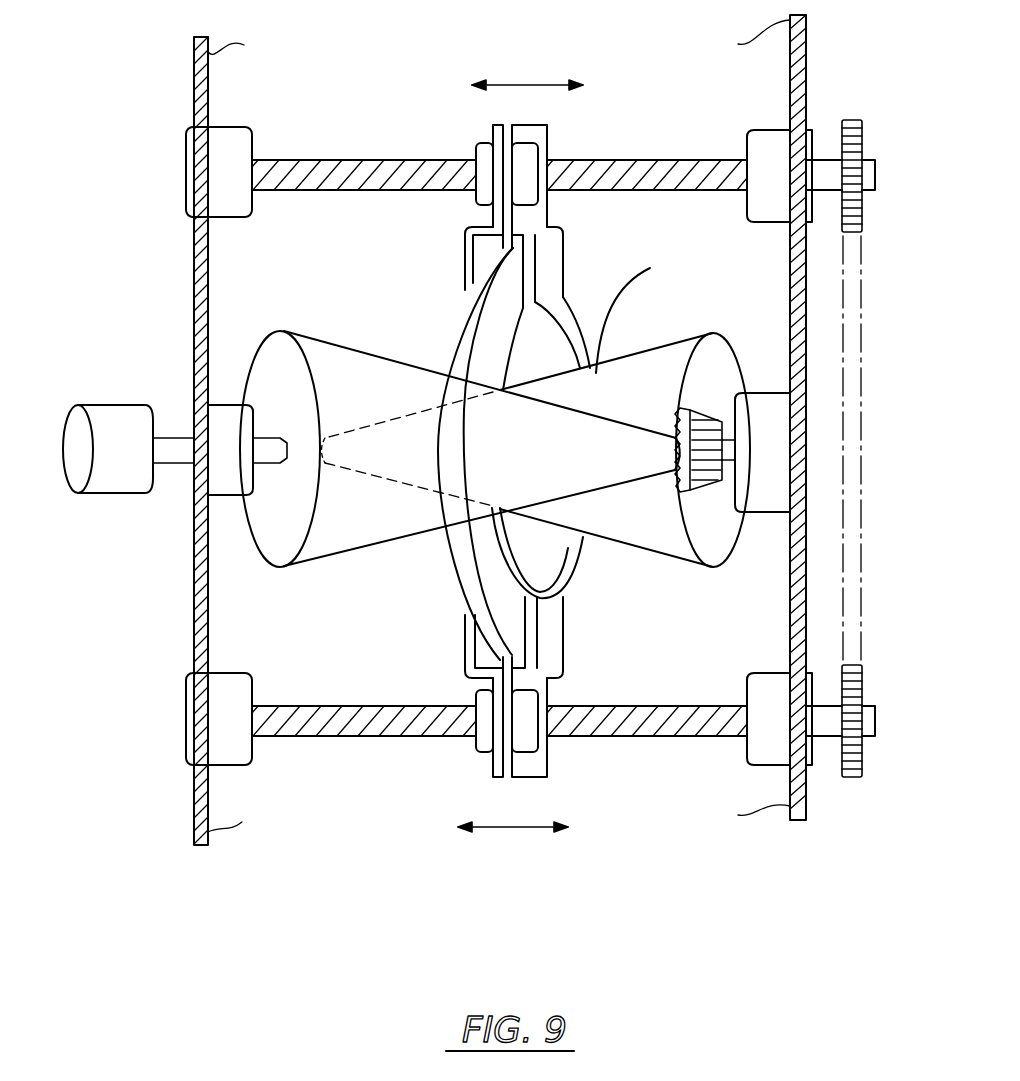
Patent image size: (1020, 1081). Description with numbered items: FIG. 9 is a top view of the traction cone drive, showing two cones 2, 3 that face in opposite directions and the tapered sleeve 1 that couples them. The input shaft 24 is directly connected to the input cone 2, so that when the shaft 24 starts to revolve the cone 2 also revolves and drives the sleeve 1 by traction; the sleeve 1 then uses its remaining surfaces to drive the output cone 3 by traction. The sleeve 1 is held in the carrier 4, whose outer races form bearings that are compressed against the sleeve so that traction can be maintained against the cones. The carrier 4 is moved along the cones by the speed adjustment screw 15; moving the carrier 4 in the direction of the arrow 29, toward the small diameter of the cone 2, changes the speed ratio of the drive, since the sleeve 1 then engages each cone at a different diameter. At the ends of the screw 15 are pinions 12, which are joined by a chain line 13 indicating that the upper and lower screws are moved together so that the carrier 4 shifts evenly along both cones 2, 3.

The sleeve 1 is at (462, 302).
The cone 2 is at (360, 365).
The cone 3 is at (598, 365).
The carrier 4 is at (478, 152).
The pinion gear 12 is at (863, 208).
The connecting shaft (chain line) 13 is at (862, 366).
The speed adjustment screw 15 is at (632, 158).
The input shaft 24 is at (126, 492).
The arrow 29 is at (522, 82).